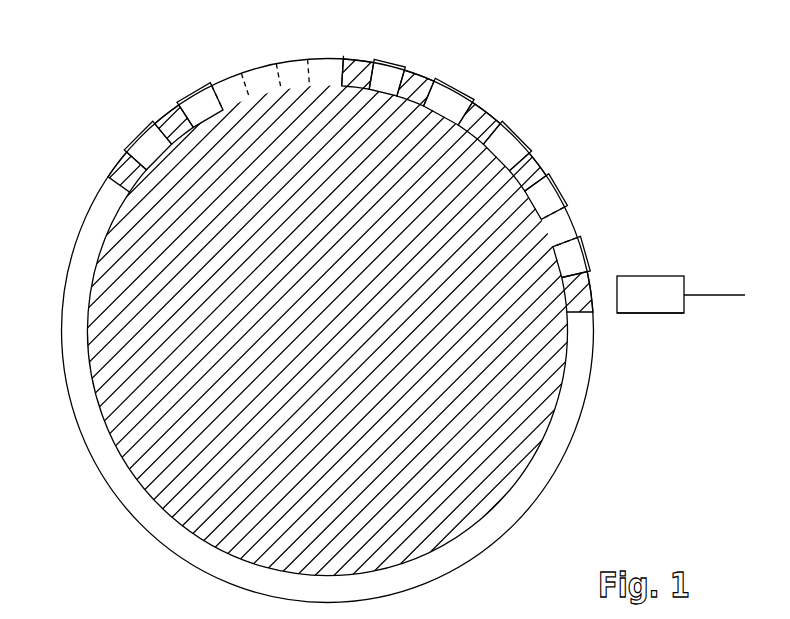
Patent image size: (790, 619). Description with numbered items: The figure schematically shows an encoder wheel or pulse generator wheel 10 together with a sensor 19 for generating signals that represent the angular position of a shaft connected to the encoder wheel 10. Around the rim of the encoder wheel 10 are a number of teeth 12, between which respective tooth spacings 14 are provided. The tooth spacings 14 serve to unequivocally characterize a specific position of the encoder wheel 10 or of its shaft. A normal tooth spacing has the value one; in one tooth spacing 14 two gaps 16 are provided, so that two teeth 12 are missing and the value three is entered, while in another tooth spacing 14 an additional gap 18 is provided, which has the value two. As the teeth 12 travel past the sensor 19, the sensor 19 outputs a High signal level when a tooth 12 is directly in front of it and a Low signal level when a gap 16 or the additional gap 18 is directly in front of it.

The encoder wheel 10 is at (647, 262).
The teeth 12 is at (120, 163).
The tooth spacings 14 is at (147, 137).
The gaps 16 is at (222, 74).
The additional gap 18 is at (577, 222).
The sensor 19 is at (650, 314).